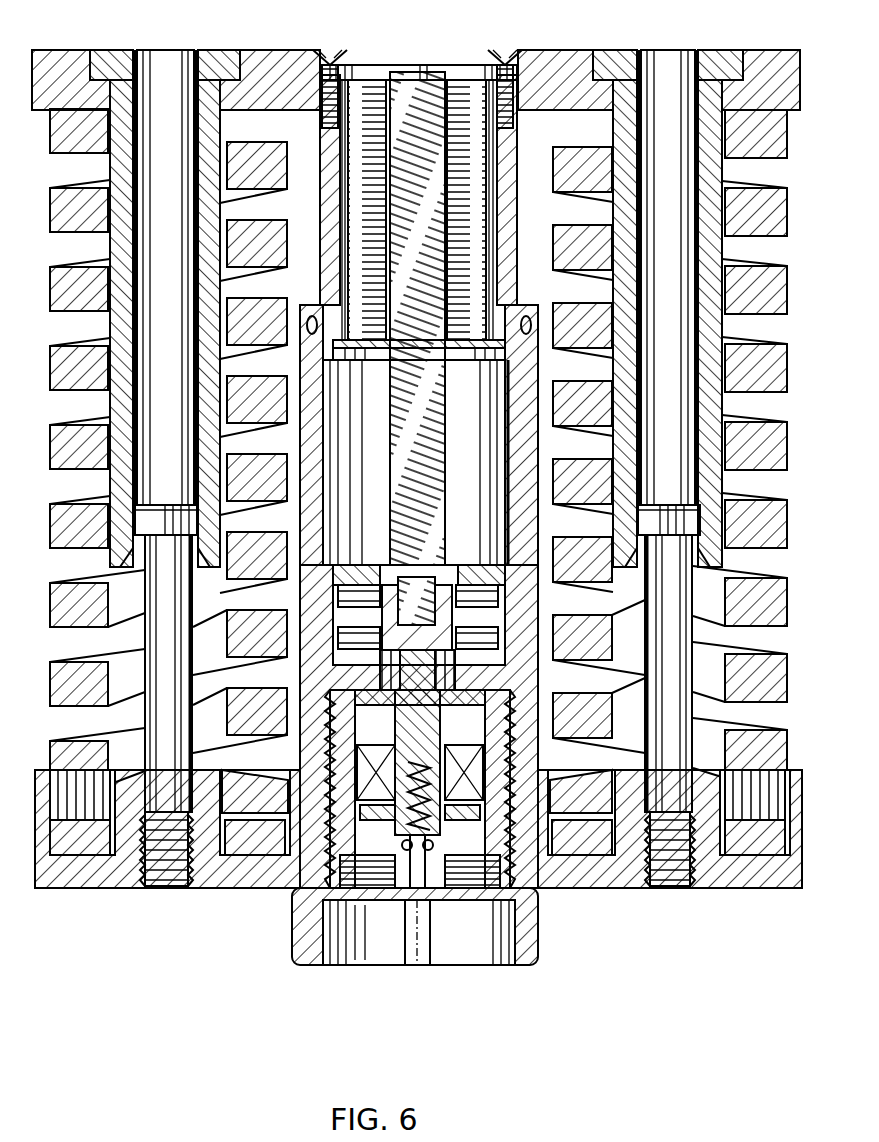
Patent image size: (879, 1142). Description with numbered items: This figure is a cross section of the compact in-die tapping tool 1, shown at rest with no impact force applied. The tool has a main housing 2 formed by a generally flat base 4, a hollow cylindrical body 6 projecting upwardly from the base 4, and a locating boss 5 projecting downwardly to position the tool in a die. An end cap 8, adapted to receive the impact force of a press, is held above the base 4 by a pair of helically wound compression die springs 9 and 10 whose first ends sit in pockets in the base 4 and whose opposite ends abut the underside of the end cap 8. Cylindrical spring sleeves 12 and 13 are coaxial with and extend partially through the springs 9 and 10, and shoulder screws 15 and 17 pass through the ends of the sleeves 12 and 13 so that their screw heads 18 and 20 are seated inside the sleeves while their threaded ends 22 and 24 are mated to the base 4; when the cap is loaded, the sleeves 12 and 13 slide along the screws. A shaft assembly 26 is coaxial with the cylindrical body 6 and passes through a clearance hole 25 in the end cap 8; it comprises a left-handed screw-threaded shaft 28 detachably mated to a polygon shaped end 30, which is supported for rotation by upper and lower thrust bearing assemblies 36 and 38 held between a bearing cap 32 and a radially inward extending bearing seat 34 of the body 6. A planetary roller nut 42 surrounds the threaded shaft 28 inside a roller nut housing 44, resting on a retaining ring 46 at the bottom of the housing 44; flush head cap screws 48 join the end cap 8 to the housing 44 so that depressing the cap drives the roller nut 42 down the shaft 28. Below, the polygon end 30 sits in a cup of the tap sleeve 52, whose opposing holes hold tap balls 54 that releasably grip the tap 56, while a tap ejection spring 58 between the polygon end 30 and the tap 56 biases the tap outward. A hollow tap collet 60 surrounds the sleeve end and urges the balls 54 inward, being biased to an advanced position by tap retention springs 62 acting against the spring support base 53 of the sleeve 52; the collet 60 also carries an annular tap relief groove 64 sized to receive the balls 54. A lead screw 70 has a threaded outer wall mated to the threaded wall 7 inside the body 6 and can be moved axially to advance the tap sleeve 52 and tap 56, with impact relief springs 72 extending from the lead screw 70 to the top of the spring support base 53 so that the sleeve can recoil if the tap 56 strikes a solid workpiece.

The compact in-die tapping tool 1 is at (603, 43).
The main housing 2 is at (805, 828).
The base 4 is at (612, 888).
The locating boss 5 is at (300, 945).
The cylindrical body 6 is at (300, 350).
The threaded wall 7 is at (495, 878).
The end cap 8 is at (292, 50).
The compression die spring 9 is at (50, 383).
The compression die spring 10 is at (770, 320).
The spring sleeve 12 is at (112, 245).
The spring sleeve 13 is at (710, 240).
The shoulder screw 15 is at (160, 698).
The shoulder screw 17 is at (667, 603).
The screw head 18 is at (150, 530).
The screw head 20 is at (700, 517).
The threaded end 22 is at (167, 886).
The threaded end 24 is at (670, 886).
The clearance hole 25 is at (410, 55).
The shaft assembly 26 is at (388, 398).
The screw-threaded shaft 28 is at (415, 75).
The polygon shaped end 30 is at (340, 695).
The bearing cap 32 is at (368, 560).
The bearing seat 34 is at (358, 660).
The upper thrust bearing assembly 36 is at (498, 590).
The lower thrust bearing assembly 38 is at (500, 640).
The planetary roller nut 42 is at (350, 240).
The roller nut housing 44 is at (505, 270).
The retaining ring 46 is at (455, 350).
The flush head cap screws 48 is at (335, 48).
The tap sleeve 52 is at (450, 712).
The spring support base 53 is at (360, 800).
The tap balls 54 is at (345, 872).
The tap 56 is at (400, 965).
The tap ejection spring 58 is at (400, 800).
The tap collet 60 is at (410, 930).
The tap retention springs 62 is at (355, 840).
The tap relief groove 64 is at (364, 932).
The lead screw 70 is at (470, 723).
The impact relief springs 72 is at (520, 800).